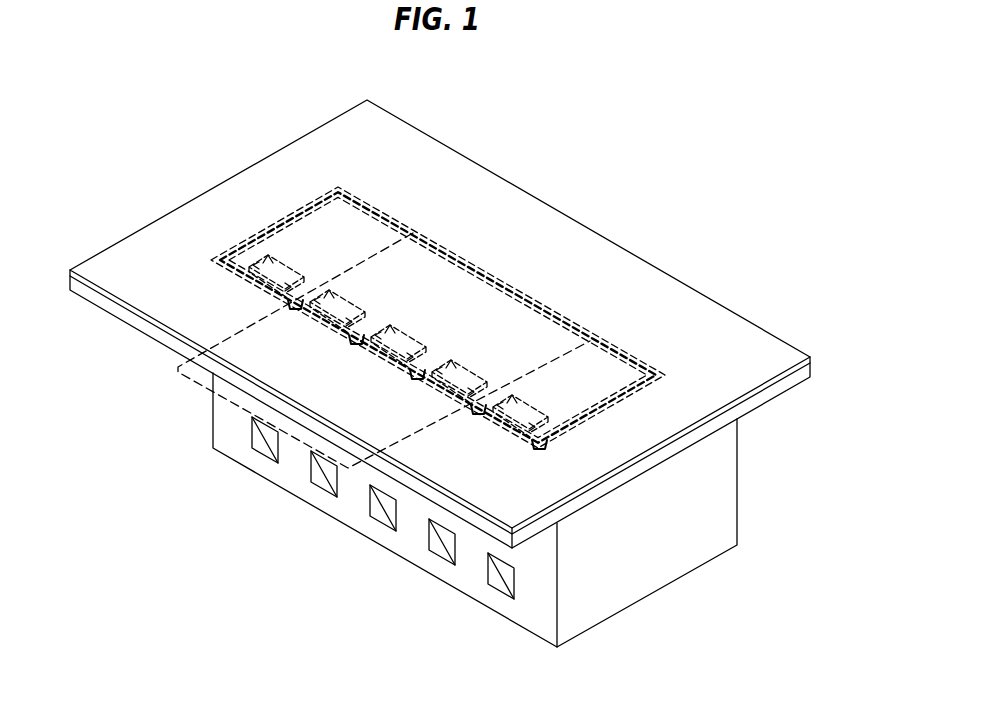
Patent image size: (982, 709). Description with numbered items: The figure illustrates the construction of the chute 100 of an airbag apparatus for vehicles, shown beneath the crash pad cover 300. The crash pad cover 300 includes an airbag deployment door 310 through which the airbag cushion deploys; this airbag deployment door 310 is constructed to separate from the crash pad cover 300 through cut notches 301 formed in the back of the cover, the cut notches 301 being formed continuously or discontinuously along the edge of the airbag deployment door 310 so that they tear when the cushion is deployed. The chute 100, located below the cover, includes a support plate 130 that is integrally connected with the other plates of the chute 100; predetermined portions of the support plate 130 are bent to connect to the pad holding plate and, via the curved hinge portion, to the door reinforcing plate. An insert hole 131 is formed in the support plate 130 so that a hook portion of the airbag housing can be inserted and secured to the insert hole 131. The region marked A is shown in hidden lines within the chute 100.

The chute 100 is at (243, 500).
The support plate 130 is at (347, 505).
The insert hole 131 is at (447, 552).
The crash pad cover 300 is at (437, 187).
The cut notches 301 is at (300, 210).
The airbag deployment door 310 is at (515, 327).
The internal substrate A is at (195, 380).